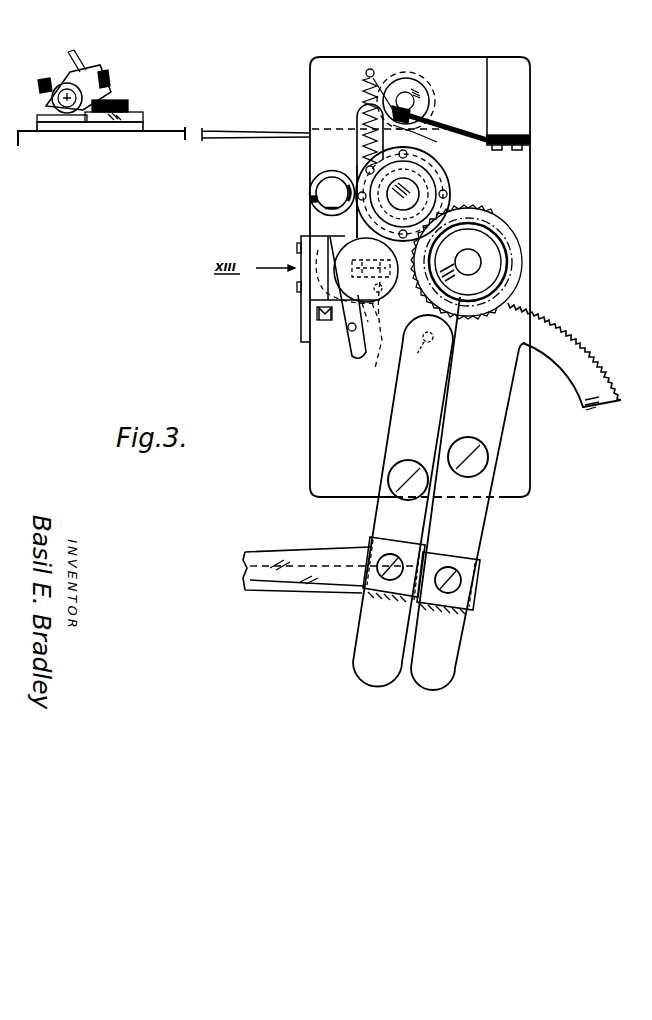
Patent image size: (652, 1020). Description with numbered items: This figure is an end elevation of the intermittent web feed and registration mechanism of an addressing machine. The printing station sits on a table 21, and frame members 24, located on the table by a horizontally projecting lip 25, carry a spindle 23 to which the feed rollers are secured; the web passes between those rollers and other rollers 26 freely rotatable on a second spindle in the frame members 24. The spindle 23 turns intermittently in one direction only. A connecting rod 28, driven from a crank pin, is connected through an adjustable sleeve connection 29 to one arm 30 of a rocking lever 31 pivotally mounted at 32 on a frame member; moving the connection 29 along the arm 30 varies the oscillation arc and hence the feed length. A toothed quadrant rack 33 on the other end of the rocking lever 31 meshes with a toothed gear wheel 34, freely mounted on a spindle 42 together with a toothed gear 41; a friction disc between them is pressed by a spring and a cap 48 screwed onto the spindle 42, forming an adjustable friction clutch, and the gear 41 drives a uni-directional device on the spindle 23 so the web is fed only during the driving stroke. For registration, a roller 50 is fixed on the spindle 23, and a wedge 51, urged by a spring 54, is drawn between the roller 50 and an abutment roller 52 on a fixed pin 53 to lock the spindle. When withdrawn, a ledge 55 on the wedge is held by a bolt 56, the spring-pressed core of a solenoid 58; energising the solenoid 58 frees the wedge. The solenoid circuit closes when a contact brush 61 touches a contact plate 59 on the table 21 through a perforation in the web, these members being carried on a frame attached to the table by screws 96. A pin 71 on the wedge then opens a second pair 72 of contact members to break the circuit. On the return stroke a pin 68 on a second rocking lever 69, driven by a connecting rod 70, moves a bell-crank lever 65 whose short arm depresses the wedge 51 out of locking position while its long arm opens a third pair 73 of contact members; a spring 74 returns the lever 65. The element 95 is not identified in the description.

The table 21 is at (33, 136).
The spindle 23 is at (415, 194).
The frame members 24 is at (463, 78).
The horizontally projecting lip 25 is at (253, 131).
The rollers 26 is at (422, 68).
The connecting rod 28 is at (277, 587).
The connection sleeve 29 is at (478, 582).
The arm 30 is at (457, 633).
The rocking lever 31 is at (473, 538).
The pivot 32 is at (480, 460).
The toothed quadrant rack 33 is at (587, 353).
The toothed gear wheel 34 is at (525, 290).
The toothed gear 41 is at (482, 208).
The spindle 42 is at (472, 262).
The cap 48 is at (497, 272).
The roller 50 is at (455, 183).
The wedge 51 is at (357, 165).
The abutment roller 52 is at (325, 193).
The pin 53 is at (313, 199).
The spring 54 is at (364, 90).
The shoulder or ledge 55 is at (381, 325).
The bolt 56 is at (357, 305).
The solenoid 58 is at (337, 237).
The contact plate 59 is at (108, 133).
The contact brush 61 is at (140, 118).
The bell-crank lever 65 is at (352, 356).
The pin 68 is at (420, 356).
The second rocking lever 69 is at (403, 422).
The connecting rod 70 is at (324, 558).
The pin 71 is at (432, 140).
The second pair of contact members 72 is at (446, 128).
The third pair of contact members 73 is at (325, 321).
The spring 74 is at (355, 359).
The motor 95 is at (45, 112).
The screws 96 is at (135, 107).